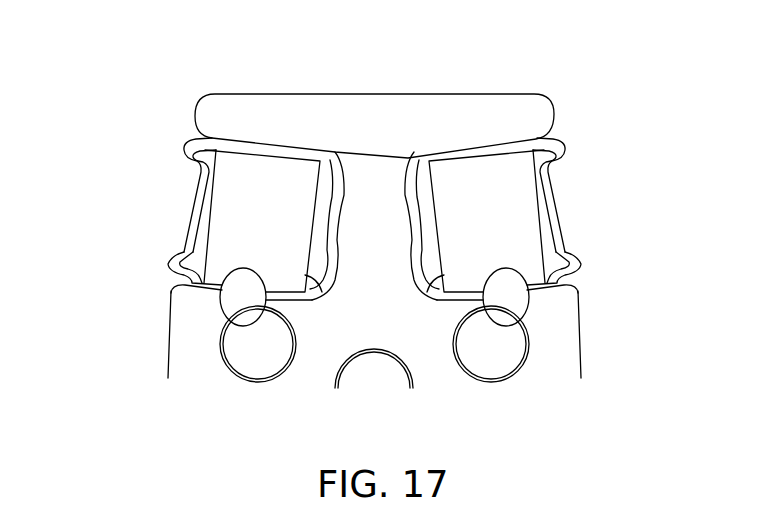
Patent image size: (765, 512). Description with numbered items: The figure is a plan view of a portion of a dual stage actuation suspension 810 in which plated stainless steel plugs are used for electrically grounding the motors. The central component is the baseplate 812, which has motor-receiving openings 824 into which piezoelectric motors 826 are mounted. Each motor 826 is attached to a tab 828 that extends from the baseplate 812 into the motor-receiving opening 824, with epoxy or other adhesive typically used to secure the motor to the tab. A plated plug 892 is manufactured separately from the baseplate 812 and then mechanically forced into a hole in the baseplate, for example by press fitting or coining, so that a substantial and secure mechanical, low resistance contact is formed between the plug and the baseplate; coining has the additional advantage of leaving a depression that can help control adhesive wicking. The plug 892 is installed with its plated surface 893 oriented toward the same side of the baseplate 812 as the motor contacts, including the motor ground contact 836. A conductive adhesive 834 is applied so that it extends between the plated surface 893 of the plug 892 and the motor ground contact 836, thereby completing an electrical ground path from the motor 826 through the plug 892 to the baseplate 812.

The suspension 810 is at (280, 403).
The baseplate 812 is at (420, 108).
The motor-receiving opening 824 is at (327, 213).
The piezoelectric motor 826 is at (222, 201).
The tab 828 is at (188, 151).
The conductive adhesive 834 is at (235, 288).
The motor ground contact 836 is at (237, 268).
The plated stainless steel plug 892 is at (240, 362).
The plated surface 893 is at (508, 366).